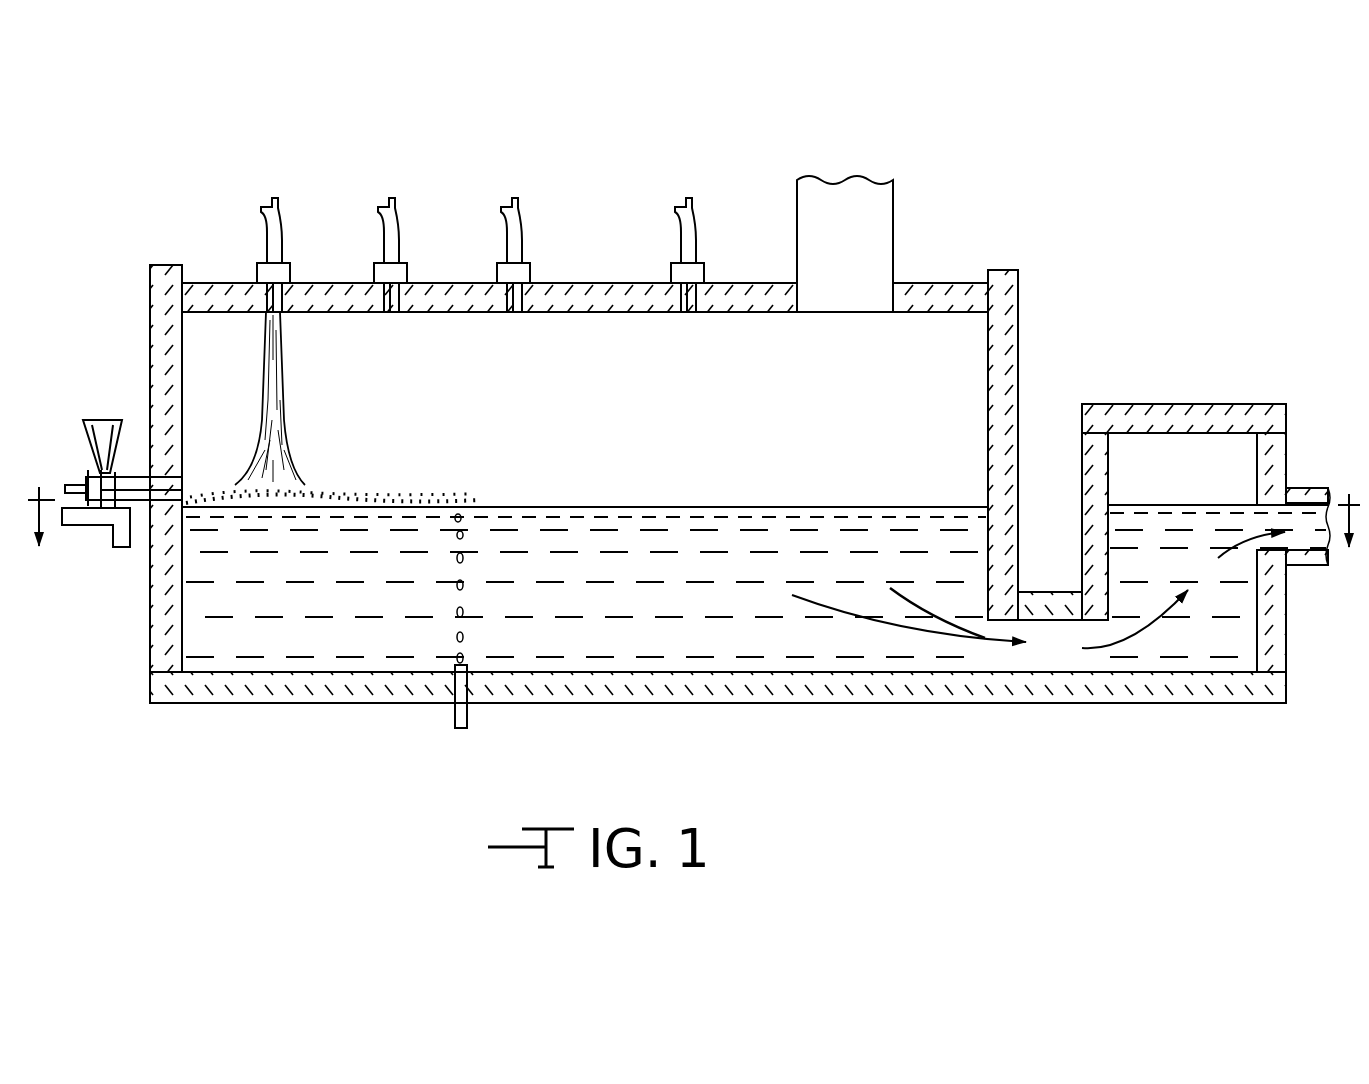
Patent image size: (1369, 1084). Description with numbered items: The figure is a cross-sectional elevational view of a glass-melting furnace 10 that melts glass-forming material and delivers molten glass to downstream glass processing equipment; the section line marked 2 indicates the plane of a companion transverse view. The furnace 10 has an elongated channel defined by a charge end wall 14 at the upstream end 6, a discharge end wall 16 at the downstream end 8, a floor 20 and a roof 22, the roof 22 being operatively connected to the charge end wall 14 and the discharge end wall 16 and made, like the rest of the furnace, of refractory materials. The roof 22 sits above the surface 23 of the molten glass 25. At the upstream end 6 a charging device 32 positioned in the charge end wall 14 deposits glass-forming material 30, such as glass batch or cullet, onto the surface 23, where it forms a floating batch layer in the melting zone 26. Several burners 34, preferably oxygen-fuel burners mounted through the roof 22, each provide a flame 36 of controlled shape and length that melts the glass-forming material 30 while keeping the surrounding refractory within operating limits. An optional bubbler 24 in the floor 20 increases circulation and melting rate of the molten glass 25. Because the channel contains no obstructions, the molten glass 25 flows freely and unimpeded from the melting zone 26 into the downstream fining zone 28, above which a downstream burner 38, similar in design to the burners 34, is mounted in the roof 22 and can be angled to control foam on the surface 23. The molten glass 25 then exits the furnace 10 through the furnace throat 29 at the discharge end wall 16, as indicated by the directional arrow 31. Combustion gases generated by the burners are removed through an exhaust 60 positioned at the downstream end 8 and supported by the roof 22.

The upstream end 6 is at (190, 201).
The downstream end 8 is at (968, 252).
The glass-melting furnace 10 is at (1072, 260).
The charge end wall 14 is at (150, 345).
The discharge end wall 16 is at (1018, 370).
The floor 20 is at (745, 700).
The roof 22 is at (582, 283).
The surface of molten glass 23 is at (552, 507).
The bubbler 24 is at (452, 718).
The molten glass 25 is at (625, 637).
The melting zone 26 is at (443, 407).
The fining zone 28 is at (875, 407).
The furnace throat 29 is at (1050, 648).
The glass-forming material 30 is at (190, 485).
The directional arrow 31 is at (965, 628).
The charging device 32 is at (94, 522).
The burners 34 is at (284, 238).
The flame 36 is at (283, 380).
The downstream burner 38 is at (698, 238).
The exhaust 60 is at (894, 240).
The section line 2 is at (693, 538).